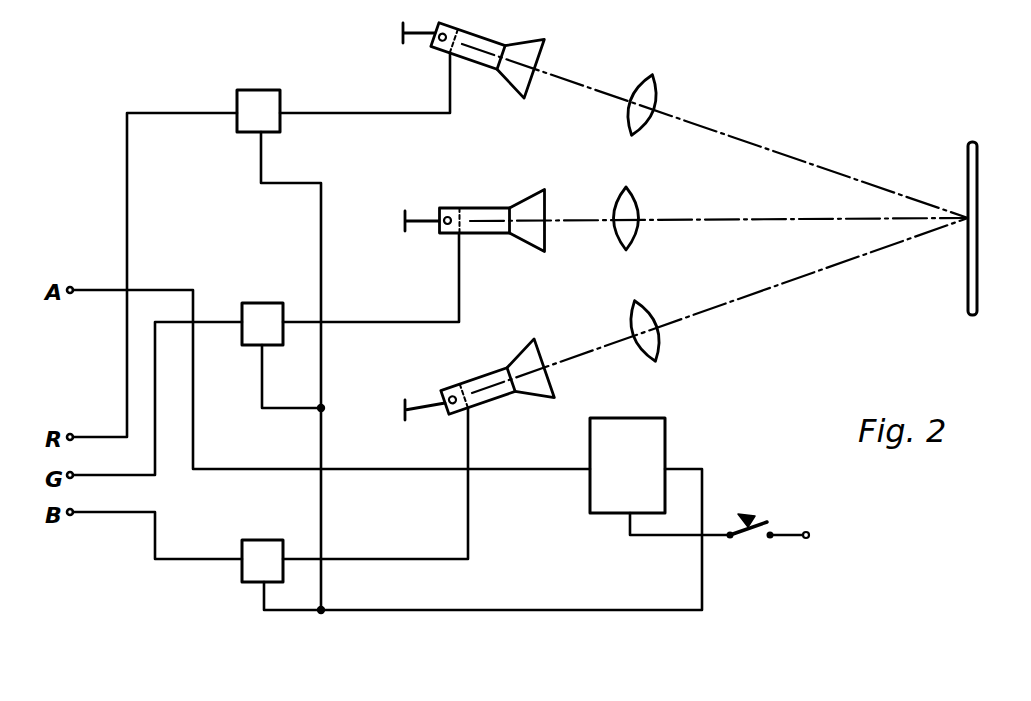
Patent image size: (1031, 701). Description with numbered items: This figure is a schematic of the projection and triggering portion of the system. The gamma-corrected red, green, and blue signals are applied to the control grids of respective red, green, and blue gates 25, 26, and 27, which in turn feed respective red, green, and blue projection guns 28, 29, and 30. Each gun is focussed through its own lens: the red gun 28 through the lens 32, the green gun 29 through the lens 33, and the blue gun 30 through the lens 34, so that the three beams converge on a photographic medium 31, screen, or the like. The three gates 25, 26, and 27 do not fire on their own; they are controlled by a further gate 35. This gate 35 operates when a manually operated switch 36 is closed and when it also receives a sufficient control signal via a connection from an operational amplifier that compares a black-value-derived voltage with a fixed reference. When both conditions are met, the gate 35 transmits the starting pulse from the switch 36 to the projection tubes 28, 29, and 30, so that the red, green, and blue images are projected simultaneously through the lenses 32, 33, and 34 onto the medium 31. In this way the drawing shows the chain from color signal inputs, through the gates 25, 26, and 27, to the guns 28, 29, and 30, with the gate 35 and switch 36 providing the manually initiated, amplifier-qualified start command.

The red gate 25 is at (289, 98).
The green gate 26 is at (282, 336).
The blue gate 27 is at (281, 541).
The red projection gun 28 is at (478, 60).
The green projection gun 29 is at (472, 230).
The blue projection gun 30 is at (499, 377).
The photographic medium 31 is at (977, 256).
The lens 32 is at (651, 93).
The lens 33 is at (632, 232).
The lens 34 is at (652, 344).
The gate 35 is at (655, 425).
The manually operated switch 36 is at (772, 530).